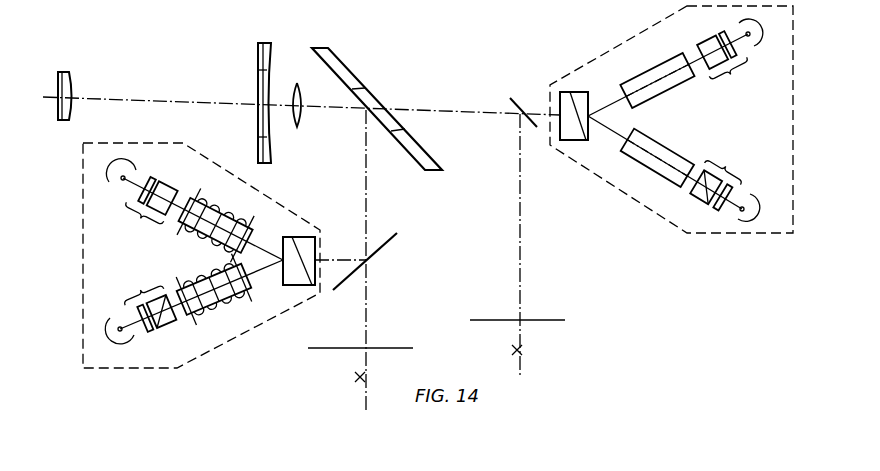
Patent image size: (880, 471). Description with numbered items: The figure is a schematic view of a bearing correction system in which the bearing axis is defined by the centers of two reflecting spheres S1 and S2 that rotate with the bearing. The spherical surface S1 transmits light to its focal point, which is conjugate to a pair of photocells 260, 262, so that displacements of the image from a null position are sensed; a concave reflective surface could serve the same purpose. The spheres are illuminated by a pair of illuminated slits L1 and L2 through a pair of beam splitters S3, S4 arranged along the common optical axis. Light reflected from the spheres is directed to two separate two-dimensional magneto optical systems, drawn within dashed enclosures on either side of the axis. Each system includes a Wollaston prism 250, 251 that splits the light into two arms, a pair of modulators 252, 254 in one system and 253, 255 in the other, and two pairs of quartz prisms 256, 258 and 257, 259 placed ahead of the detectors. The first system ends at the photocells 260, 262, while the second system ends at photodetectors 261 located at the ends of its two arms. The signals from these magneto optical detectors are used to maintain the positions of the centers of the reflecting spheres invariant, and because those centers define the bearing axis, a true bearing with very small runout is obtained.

The Wollaston prism 250 is at (307, 237).
The Wollaston prism 251 is at (571, 92).
The modulator 252 is at (210, 238).
The modulator 253 is at (655, 101).
The modulator 254 is at (212, 279).
The modulator 255 is at (656, 146).
The quartz prism 256 is at (151, 203).
The quartz prism 257 is at (722, 62).
The quartz prism 258 is at (149, 307).
The quartz prism 259 is at (718, 184).
The photocell 260 is at (109, 183).
The photodetector 261 is at (754, 46).
The photocell 262 is at (110, 318).
The reflecting sphere S1 is at (73, 80).
The reflecting sphere S2 is at (271, 48).
The beam splitter S3 is at (352, 72).
The beam splitter S4 is at (520, 114).
The illuminated slit L1 is at (520, 320).
The illuminated slit L2 is at (366, 348).